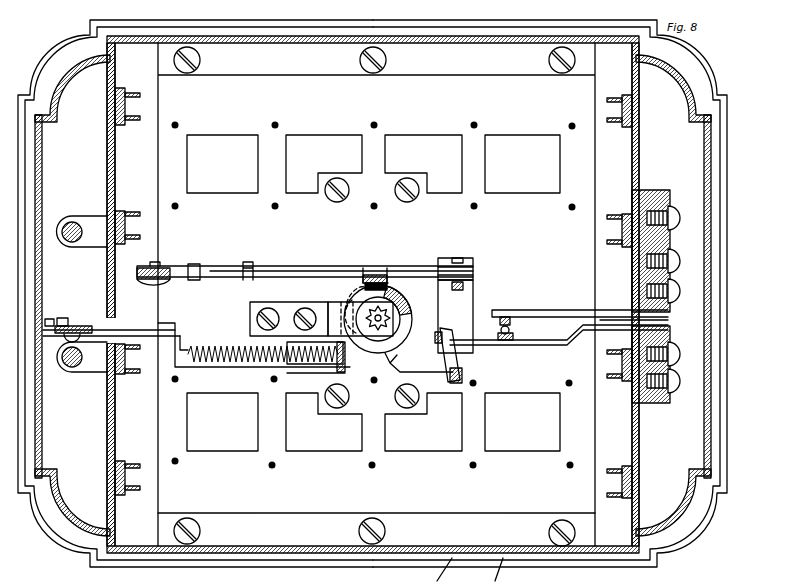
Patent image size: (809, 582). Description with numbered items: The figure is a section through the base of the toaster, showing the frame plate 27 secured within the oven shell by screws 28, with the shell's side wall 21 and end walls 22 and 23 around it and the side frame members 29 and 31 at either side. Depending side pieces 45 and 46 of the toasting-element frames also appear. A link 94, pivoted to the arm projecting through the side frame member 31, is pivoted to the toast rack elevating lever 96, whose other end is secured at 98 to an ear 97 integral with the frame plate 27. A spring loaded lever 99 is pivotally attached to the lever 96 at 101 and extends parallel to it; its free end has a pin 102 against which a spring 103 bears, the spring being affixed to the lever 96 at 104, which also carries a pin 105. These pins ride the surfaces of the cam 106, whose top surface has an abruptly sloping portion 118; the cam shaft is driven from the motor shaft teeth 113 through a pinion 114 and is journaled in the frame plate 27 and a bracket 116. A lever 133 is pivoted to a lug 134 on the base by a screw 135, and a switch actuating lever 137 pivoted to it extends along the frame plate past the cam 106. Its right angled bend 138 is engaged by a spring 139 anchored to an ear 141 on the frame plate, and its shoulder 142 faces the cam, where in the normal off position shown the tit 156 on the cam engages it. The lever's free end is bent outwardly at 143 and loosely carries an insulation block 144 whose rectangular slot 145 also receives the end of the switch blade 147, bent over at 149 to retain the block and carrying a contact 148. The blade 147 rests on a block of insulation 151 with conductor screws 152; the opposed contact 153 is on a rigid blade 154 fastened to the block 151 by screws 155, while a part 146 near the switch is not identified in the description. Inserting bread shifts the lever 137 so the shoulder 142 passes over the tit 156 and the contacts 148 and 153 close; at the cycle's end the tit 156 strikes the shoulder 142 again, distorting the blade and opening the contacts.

The side wall 21 is at (472, 42).
The end wall 22 is at (727, 211).
The end wall 23 is at (35, 226).
The frame plate 27 is at (376, 294).
The screws 28 is at (549, 533).
The side frame member 29 is at (638, 138).
The side frame member 31 is at (110, 143).
The depending side piece 45 is at (615, 500).
The depending side piece 46 is at (137, 493).
The link 94 is at (142, 277).
The toast rack elevating lever 96 is at (338, 266).
The ear 97 is at (475, 276).
The pivot 98 is at (475, 284).
The spring loaded lever 99 is at (307, 274).
The pivot 101 is at (247, 266).
The pin 102 is at (383, 284).
The spring 103 is at (272, 272).
The spring attachment point 104 is at (193, 264).
The pin 105 is at (368, 274).
The cam 106 is at (355, 391).
The teeth 113 is at (352, 294).
The pinion 114 is at (303, 301).
The bracket 116 is at (257, 304).
The abruptly sloping portion 118 is at (403, 284).
The lever 133 is at (83, 326).
The lug 134 is at (48, 321).
The screw 135 is at (55, 322).
The switch actuating lever 137 is at (188, 375).
The right angled bend 138 is at (170, 365).
The spring 139 is at (197, 342).
The ear 141 is at (363, 360).
The shoulder 142 is at (397, 362).
The outwardly bent end 143 is at (460, 378).
The block of insulation material 144 is at (452, 357).
The rectangular slot 145 is at (440, 383).
The switch block 146 is at (455, 316).
The switch blade 147 is at (550, 345).
The contact 148 is at (517, 335).
The bent over end 149 is at (430, 333).
The block of insulation 151 is at (643, 403).
The screws 152 is at (683, 377).
The opposed contact 153 is at (502, 315).
The rigid blade 154 is at (538, 315).
The screws 155 is at (683, 301).
The tit 156 is at (394, 374).